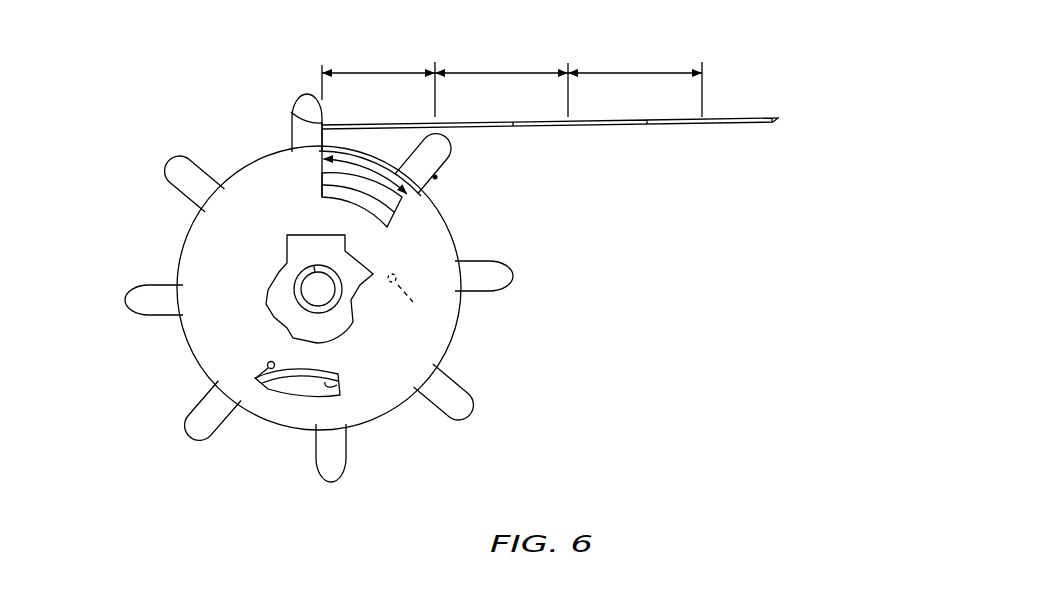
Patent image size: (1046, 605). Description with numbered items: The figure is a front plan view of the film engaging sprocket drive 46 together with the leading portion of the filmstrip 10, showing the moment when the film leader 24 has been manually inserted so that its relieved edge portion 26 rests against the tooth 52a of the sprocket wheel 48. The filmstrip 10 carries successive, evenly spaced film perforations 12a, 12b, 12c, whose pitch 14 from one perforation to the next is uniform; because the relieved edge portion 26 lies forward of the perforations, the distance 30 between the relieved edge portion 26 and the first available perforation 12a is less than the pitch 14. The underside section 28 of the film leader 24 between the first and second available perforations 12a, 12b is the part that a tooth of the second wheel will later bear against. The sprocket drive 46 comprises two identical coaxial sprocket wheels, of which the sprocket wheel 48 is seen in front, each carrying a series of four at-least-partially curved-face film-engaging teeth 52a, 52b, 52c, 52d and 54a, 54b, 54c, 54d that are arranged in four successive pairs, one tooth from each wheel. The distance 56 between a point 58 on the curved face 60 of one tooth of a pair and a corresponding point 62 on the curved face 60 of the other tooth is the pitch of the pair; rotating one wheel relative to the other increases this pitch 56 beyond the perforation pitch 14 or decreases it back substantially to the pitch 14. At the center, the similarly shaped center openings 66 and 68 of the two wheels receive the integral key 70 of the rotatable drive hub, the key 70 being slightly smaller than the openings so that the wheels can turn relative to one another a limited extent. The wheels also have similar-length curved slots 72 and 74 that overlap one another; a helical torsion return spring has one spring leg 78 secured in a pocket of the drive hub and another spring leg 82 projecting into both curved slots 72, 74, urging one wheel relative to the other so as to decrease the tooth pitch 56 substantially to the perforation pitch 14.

The filmstrip 10 is at (541, 106).
The film perforation 12a is at (392, 123).
The film perforation 12b is at (545, 127).
The film perforation 12c is at (683, 125).
The pitch of the film perforations 14 is at (497, 73).
The film leader 24 is at (733, 118).
The relieved edge portion 26 is at (291, 113).
The underside section of the film leader 28 is at (487, 128).
The distance between relieved edge portion and first perforation 30 is at (372, 59).
The film engaging sprocket drive 46 is at (336, 274).
The sprocket wheel 48 is at (457, 337).
The film-engaging tooth 52a is at (295, 95).
The film-engaging tooth 52b is at (518, 274).
The film-engaging tooth 52c is at (336, 486).
The film-engaging tooth 52d is at (122, 302).
The film-engaging tooth 54a is at (452, 138).
The film-engaging tooth 54b is at (469, 417).
The film-engaging tooth 54c is at (190, 440).
The film-engaging tooth 54d is at (168, 158).
The pitch of the two teeth in a pair 56 is at (350, 184).
The point on curved face 58 is at (322, 130).
The curved face 60 is at (291, 110).
The corresponding point on curved face 62 is at (435, 178).
The center opening 66 is at (279, 289).
The center opening 68 is at (272, 309).
The key 70 is at (289, 263).
The curved slot 72 is at (358, 426).
The curved slot 74 is at (342, 385).
The spring leg 78 is at (411, 303).
The spring leg 82 is at (268, 362).